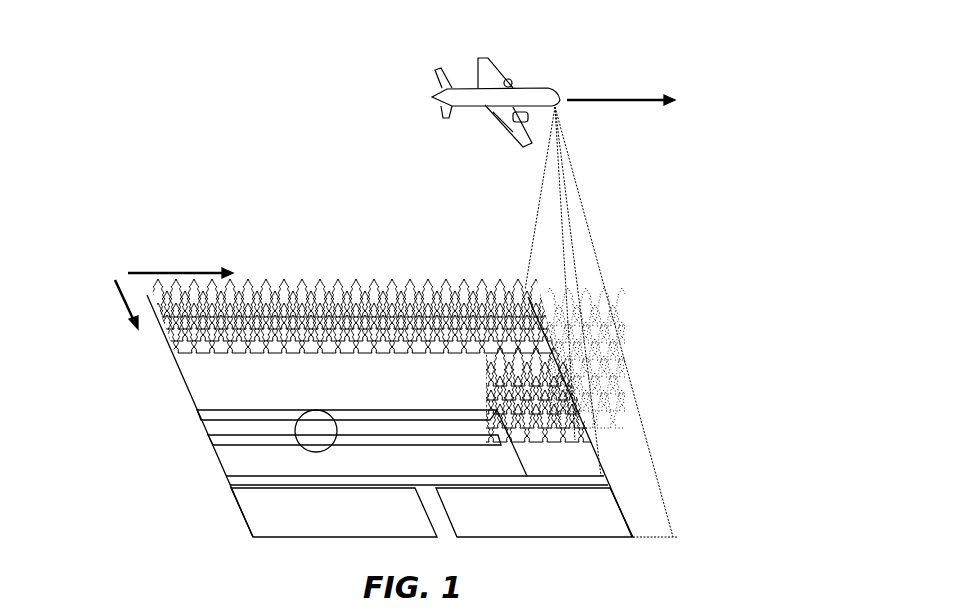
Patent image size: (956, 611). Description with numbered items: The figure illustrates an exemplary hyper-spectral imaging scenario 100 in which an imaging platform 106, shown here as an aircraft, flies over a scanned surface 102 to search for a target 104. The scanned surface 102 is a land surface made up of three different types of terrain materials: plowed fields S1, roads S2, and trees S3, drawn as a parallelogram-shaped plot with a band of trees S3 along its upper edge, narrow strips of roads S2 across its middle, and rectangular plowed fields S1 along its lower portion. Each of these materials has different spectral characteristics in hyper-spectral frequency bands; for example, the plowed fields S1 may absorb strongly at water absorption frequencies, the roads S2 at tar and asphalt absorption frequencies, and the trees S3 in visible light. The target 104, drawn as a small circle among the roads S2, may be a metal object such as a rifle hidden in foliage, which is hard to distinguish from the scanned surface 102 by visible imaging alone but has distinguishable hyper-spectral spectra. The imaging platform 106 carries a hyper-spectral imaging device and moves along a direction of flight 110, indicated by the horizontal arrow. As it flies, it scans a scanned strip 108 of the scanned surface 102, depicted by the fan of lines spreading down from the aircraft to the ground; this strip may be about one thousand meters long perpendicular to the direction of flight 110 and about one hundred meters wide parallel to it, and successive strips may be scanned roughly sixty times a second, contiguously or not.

The hyper-spectral imaging scenario 100 is at (242, 151).
The scanned surface 102 is at (332, 290).
The target 104 is at (316, 424).
The imaging platform 106 is at (527, 87).
The scanned strip 108 is at (655, 510).
The direction of flight 110 is at (627, 98).
The plowed fields S1 is at (553, 523).
The roads S2 is at (233, 482).
The trees S3 is at (147, 295).